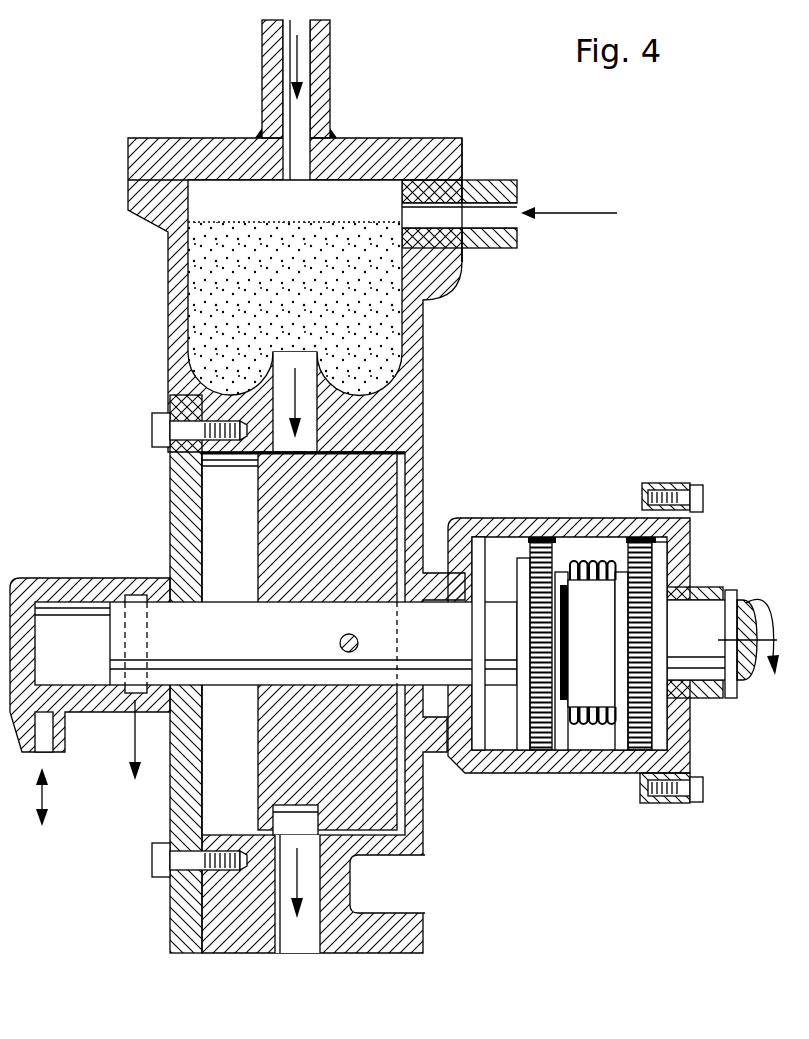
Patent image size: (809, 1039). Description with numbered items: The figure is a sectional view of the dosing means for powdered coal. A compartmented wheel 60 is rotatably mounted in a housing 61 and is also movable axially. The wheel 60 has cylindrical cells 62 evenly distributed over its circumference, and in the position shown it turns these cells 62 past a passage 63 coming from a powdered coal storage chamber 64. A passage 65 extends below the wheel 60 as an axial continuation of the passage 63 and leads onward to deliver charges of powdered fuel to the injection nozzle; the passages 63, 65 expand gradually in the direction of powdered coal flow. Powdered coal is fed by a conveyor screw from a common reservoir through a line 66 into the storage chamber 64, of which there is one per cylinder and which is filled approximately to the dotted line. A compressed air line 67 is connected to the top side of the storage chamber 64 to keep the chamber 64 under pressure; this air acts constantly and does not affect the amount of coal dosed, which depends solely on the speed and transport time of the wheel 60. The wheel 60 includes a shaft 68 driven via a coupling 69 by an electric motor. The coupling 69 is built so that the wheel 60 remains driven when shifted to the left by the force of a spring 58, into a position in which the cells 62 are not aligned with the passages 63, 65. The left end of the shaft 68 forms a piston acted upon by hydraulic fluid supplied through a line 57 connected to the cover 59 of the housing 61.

The line 57 is at (63, 752).
The spring 58 is at (578, 732).
The cover 59 is at (172, 506).
The compartmented wheel 60 is at (303, 643).
The housing 61 is at (430, 394).
The cells 62 is at (302, 812).
The passage 63 is at (310, 372).
The storage chamber 64 is at (178, 328).
The passage 65 is at (307, 950).
The line 66 is at (494, 240).
The compressed air line 67 is at (265, 100).
The shaft 68 is at (407, 642).
The coupling 69 is at (482, 508).